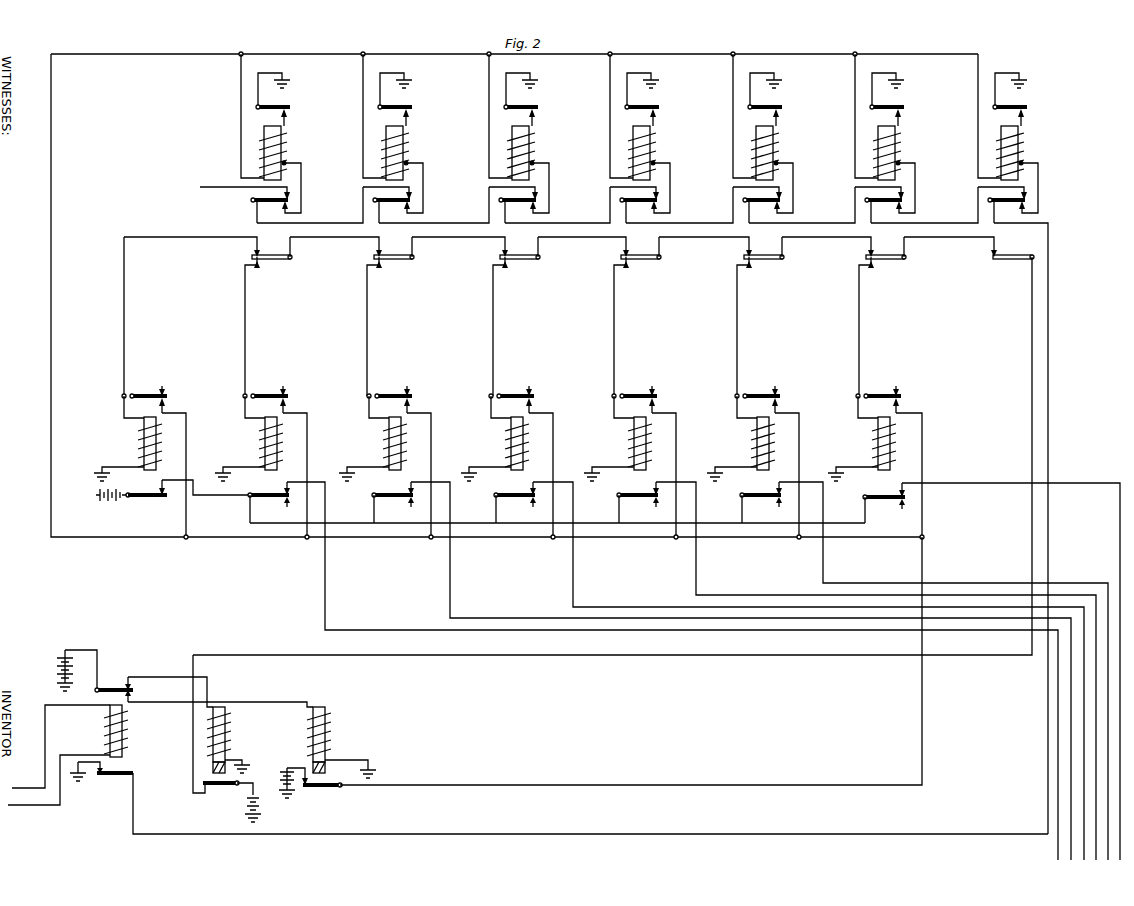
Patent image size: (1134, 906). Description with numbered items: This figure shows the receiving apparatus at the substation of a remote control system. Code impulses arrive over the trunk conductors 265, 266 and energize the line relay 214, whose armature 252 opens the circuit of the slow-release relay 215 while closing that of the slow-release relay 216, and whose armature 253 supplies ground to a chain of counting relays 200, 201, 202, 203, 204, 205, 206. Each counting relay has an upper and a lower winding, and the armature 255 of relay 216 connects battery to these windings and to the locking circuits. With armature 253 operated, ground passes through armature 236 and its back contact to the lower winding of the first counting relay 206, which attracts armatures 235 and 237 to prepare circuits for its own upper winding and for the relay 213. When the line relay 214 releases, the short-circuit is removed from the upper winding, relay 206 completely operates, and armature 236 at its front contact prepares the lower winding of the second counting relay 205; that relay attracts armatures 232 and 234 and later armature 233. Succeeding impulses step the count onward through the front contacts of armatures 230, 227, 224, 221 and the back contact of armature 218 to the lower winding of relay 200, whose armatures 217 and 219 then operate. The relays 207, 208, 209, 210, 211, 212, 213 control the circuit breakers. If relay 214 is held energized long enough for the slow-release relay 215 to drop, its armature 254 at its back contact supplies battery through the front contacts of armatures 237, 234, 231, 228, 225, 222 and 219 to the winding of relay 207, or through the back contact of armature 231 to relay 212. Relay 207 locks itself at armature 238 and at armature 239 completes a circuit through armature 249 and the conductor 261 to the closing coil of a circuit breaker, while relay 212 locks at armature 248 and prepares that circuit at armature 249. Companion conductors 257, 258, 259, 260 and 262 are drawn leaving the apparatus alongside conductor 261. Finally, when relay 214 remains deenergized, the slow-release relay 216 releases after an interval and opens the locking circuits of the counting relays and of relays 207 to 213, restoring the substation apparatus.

The counting relay 200 is at (279, 133).
The counting relay 201 is at (401, 133).
The counting relay 202 is at (527, 133).
The counting relay 203 is at (648, 133).
The counting relay 204 is at (771, 133).
The second counting relay 205 is at (893, 133).
The first counting relay 206 is at (1016, 133).
The relay 207 is at (128, 437).
The relay 208 is at (262, 462).
The relay 209 is at (386, 462).
The relay 210 is at (508, 462).
The relay 211 is at (631, 462).
The relay 212 is at (741, 437).
The relay 213 is at (876, 462).
The line relay 214 is at (123, 741).
The slow-release relay 215 is at (226, 740).
The slow-release relay 216 is at (326, 740).
The armature 217 is at (288, 93).
The armature 218 is at (281, 205).
The armature 219 is at (217, 316).
The armature 221 is at (426, 205).
The armature 222 is at (361, 316).
The armature 224 is at (549, 205).
The armature 225 is at (485, 316).
The armature 227 is at (671, 205).
The armature 228 is at (608, 316).
The armature 230 is at (794, 205).
The armature 231 is at (730, 316).
The armature 232 is at (902, 93).
The armature 233 is at (916, 205).
The armature 234 is at (853, 316).
The armature 235 is at (1025, 93).
The armature 236 is at (1013, 510).
The armature 237 is at (1020, 260).
The armature 238 is at (159, 458).
The armature 239 is at (150, 499).
The armature 248 is at (772, 458).
The armature 249 is at (761, 503).
The armature 252 is at (126, 686).
The armature 253 is at (128, 778).
The armature 254 is at (228, 786).
The armature 255 is at (312, 787).
The output conductor 257 is at (1058, 685).
The output conductor 258 is at (1071, 713).
The output conductor 259 is at (1084, 741).
The output conductor 260 is at (1096, 769).
The conductor 261 is at (1108, 797).
The output conductor 262 is at (1120, 825).
The trunk conductor 265 is at (28, 781).
The trunk conductor 266 is at (46, 805).